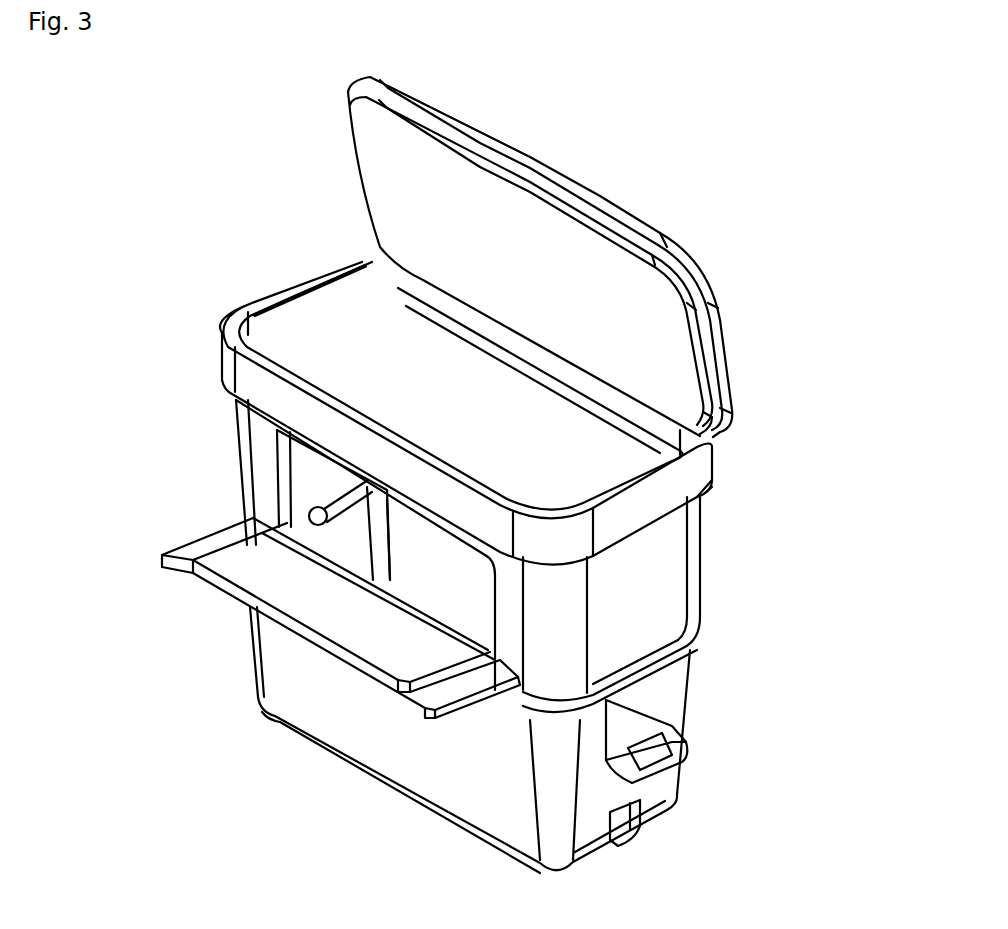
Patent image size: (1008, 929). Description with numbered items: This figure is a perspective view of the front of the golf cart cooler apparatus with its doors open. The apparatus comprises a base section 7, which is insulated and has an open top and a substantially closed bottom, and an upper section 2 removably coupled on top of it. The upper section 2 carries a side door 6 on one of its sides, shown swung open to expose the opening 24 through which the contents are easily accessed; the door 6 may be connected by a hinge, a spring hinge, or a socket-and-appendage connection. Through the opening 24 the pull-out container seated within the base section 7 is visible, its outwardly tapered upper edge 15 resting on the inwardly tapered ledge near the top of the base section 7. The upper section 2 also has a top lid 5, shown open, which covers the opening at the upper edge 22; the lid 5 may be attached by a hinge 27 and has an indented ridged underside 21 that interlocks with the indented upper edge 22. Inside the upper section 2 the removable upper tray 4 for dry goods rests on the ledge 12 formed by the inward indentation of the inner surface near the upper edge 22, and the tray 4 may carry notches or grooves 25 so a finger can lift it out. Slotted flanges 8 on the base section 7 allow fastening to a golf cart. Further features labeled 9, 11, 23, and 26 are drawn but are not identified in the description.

The upper section 2 is at (658, 573).
The upper tray 4 is at (368, 355).
The top lid 5 is at (517, 252).
The side door 6 is at (255, 571).
The base section 7 is at (304, 690).
The slotted flanges 8 is at (668, 768).
The body lower edge 9 is at (708, 618).
The body bottom rim 11 is at (706, 653).
The ledge 12 is at (713, 494).
The outwardly tapered upper edge 15 is at (345, 493).
The indented ridged underside 21 is at (697, 360).
The upper edge 22 is at (260, 300).
The handle 23 is at (674, 741).
The opening 24 is at (400, 564).
The notches or grooves 25 is at (624, 846).
The plate end block 26 is at (192, 545).
The hinge 27 is at (722, 438).